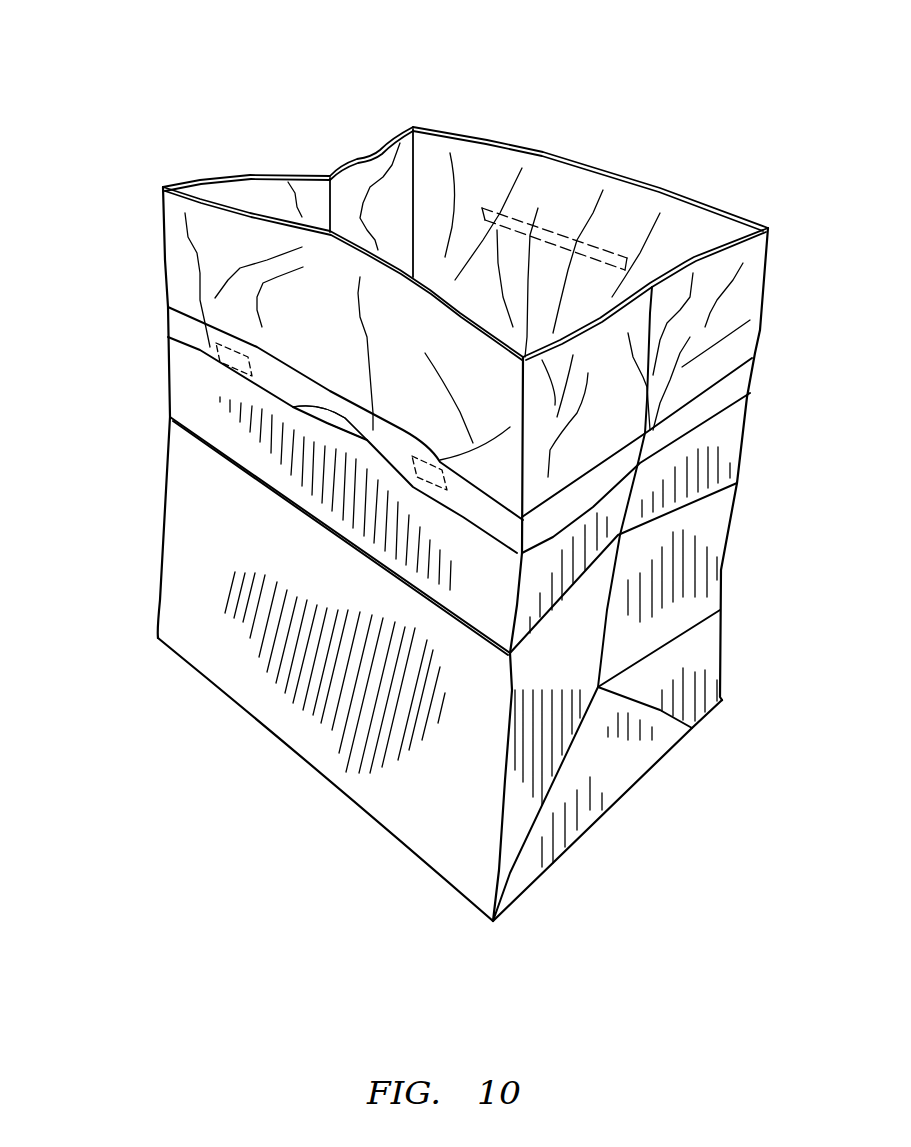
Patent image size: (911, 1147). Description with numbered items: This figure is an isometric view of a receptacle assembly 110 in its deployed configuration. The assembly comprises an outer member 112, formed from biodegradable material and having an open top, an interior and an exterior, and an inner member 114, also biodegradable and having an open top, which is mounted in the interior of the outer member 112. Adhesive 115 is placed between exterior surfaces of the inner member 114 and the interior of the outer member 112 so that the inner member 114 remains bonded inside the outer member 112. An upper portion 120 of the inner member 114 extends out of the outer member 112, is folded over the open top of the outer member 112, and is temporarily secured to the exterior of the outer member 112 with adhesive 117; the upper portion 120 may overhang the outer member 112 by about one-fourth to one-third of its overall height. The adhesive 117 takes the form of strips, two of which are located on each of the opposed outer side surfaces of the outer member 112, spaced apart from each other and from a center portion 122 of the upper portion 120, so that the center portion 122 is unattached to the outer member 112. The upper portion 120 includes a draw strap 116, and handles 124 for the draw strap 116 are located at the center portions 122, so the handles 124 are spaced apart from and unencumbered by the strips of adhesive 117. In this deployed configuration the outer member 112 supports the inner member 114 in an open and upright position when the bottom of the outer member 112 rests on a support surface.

The receptacle assembly 110 is at (122, 54).
The outer member 112 is at (182, 577).
The inner member 114 is at (487, 160).
The adhesive 115 is at (538, 208).
The draw strap 116 is at (320, 407).
The adhesive strips 117 is at (216, 365).
The upper portion 120 is at (157, 183).
The center portion 122 is at (360, 424).
The handles 124 is at (225, 434).